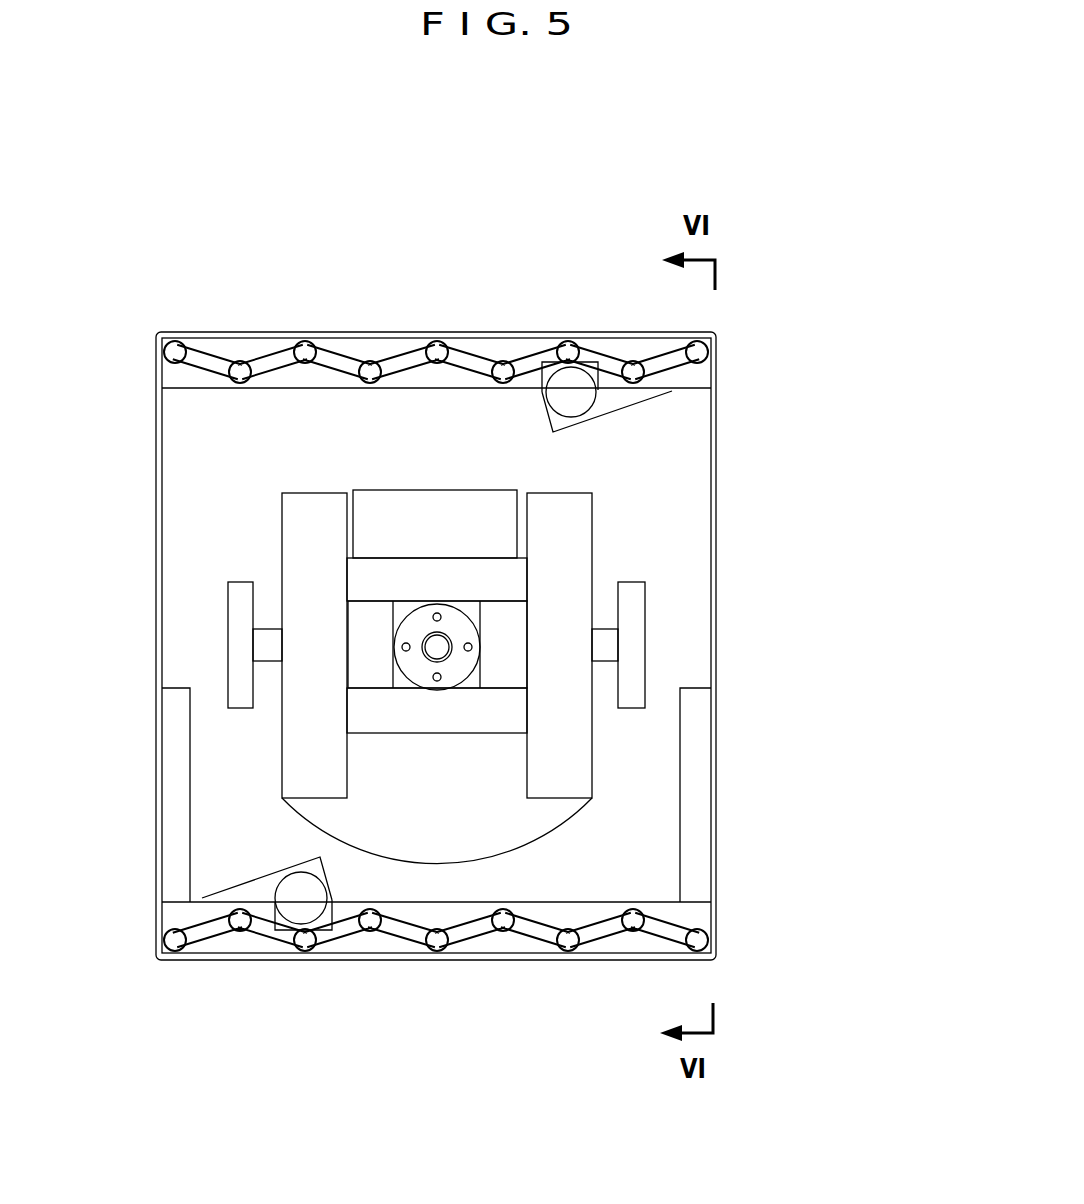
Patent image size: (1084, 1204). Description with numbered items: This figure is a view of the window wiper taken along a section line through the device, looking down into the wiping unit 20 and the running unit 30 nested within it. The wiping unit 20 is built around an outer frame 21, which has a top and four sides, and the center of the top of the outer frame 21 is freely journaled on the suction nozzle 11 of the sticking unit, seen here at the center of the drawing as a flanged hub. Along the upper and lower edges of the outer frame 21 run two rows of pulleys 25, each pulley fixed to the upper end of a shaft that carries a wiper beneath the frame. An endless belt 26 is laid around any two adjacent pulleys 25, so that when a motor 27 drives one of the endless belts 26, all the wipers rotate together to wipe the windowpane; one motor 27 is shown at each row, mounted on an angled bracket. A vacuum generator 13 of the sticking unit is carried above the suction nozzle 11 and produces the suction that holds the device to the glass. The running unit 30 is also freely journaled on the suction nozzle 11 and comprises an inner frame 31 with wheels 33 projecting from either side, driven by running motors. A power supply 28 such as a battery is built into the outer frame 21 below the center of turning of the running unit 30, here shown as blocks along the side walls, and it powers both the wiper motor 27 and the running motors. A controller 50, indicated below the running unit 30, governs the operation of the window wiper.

The wiping unit 20 is at (165, 246).
The outer frame 21 is at (712, 483).
The pulleys 25 is at (240, 370).
The endless belt 26 is at (272, 348).
The motor 27 is at (575, 403).
The power supply 28 is at (177, 728).
The vacuum generator 13 is at (452, 513).
The suction nozzle 11 is at (434, 645).
The running unit 30 is at (494, 531).
The inner frame 31 is at (575, 772).
The wheels 33 is at (240, 645).
The controller 50 is at (400, 837).